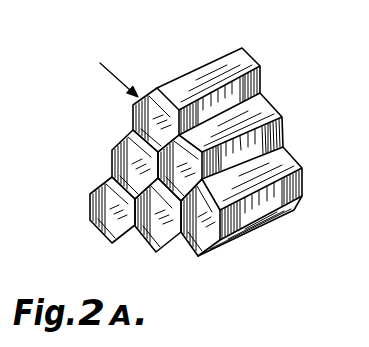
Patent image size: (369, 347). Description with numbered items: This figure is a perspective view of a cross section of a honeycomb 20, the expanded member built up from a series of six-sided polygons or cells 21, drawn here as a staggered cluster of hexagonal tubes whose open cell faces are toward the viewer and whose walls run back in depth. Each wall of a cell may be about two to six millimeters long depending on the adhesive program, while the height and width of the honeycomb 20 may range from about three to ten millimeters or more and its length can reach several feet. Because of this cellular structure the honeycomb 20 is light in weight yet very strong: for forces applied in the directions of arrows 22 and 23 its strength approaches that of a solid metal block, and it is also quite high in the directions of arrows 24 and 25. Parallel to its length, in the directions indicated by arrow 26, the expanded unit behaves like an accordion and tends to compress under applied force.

The honeycomb 20 is at (228, 99).
The cells 21 is at (168, 224).
The arrow 22 is at (60, 250).
The arrow 23 is at (296, 110).
The arrow 24 is at (167, 15).
The arrow 25 is at (212, 298).
The arrow 26 is at (318, 255).